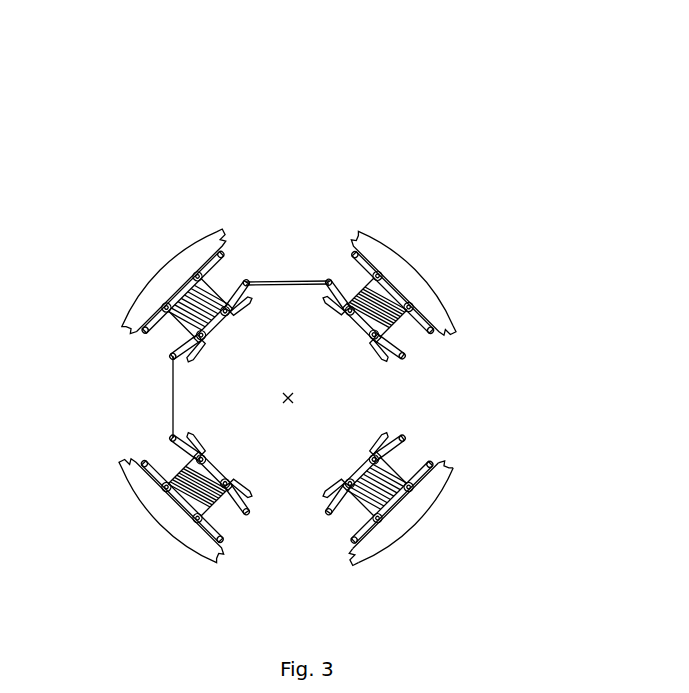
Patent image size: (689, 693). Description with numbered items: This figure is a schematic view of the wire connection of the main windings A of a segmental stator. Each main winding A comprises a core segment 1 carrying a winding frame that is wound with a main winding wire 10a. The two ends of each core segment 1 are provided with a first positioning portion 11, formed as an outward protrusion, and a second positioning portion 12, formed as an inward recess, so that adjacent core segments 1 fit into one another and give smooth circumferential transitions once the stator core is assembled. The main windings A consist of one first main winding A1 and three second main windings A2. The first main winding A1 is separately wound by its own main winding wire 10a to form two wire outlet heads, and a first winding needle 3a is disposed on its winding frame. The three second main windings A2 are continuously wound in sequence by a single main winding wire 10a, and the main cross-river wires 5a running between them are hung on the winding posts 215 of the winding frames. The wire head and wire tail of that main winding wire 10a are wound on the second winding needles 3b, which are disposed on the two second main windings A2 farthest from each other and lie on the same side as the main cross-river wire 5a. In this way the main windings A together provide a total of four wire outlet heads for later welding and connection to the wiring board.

The main winding A is at (300, 80).
The first main winding A1 is at (423, 527).
The second main winding A2 is at (168, 262).
The core segment 1 is at (378, 248).
The main winding wire 10a is at (243, 277).
The main cross-river wire 5a is at (286, 281).
The winding post 215 is at (172, 437).
The first winding needle 3a is at (338, 485).
The second winding needle 3b is at (362, 332).
The first positioning portion 11 is at (455, 468).
The second positioning portion 12 is at (358, 552).